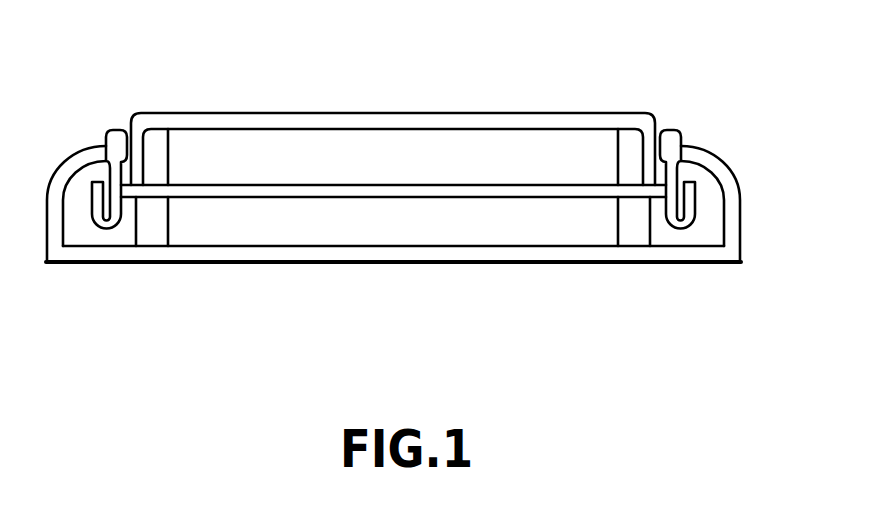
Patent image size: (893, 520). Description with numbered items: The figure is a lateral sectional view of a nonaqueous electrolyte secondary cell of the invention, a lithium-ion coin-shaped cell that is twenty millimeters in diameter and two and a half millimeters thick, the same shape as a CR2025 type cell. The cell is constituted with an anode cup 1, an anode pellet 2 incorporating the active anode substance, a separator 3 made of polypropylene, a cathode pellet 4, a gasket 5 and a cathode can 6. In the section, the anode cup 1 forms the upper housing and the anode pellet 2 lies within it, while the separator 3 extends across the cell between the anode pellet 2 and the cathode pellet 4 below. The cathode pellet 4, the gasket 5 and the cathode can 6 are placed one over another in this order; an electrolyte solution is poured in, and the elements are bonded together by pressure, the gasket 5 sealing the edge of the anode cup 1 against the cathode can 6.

The anode cup 1 is at (515, 118).
The anode pellet 2 is at (227, 138).
The separator 3 is at (319, 190).
The cathode pellet 4 is at (473, 232).
The gasket 5 is at (720, 223).
The cathode can 6 is at (263, 263).